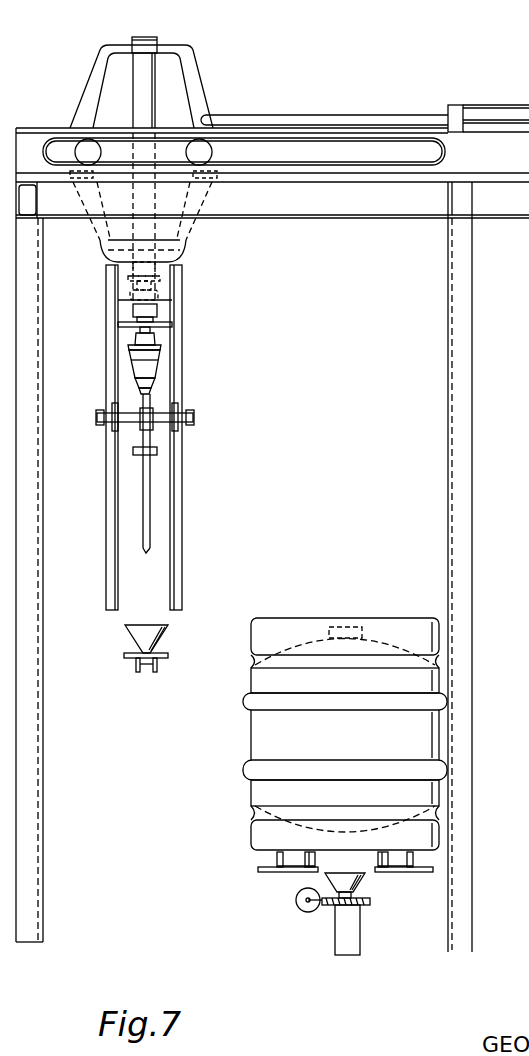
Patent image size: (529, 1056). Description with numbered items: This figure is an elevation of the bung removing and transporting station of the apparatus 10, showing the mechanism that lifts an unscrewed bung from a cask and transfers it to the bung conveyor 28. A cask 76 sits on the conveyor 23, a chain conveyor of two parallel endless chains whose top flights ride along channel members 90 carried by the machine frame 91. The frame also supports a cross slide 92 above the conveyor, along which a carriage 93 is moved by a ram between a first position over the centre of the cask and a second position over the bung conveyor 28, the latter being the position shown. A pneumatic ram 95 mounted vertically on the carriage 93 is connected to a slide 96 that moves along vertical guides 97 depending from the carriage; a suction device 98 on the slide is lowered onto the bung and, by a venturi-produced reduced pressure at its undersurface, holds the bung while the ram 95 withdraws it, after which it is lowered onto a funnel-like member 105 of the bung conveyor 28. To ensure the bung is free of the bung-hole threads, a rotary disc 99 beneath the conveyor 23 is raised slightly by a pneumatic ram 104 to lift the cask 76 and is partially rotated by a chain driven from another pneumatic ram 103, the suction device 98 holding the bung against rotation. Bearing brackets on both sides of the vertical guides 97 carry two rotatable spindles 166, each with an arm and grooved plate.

The cross slide 92 is at (372, 137).
The carriage 93 is at (213, 108).
The pneumatic ram 95 is at (152, 70).
The slide 96 is at (160, 312).
The suction device 98 is at (160, 348).
The spindles 166 is at (160, 412).
The vertical guides 97 is at (184, 481).
The funnel-like members 105 is at (128, 636).
The bung conveyor 28 is at (136, 661).
The cask 76 is at (432, 738).
The channel member 90 is at (277, 858).
The conveyor 23 is at (295, 864).
The rotary disc 99 is at (367, 877).
The pneumatic ram 103 is at (297, 912).
The pneumatic ram 104 is at (335, 948).
The machine frame 91 is at (44, 855).
The apparatus 10 is at (522, 574).